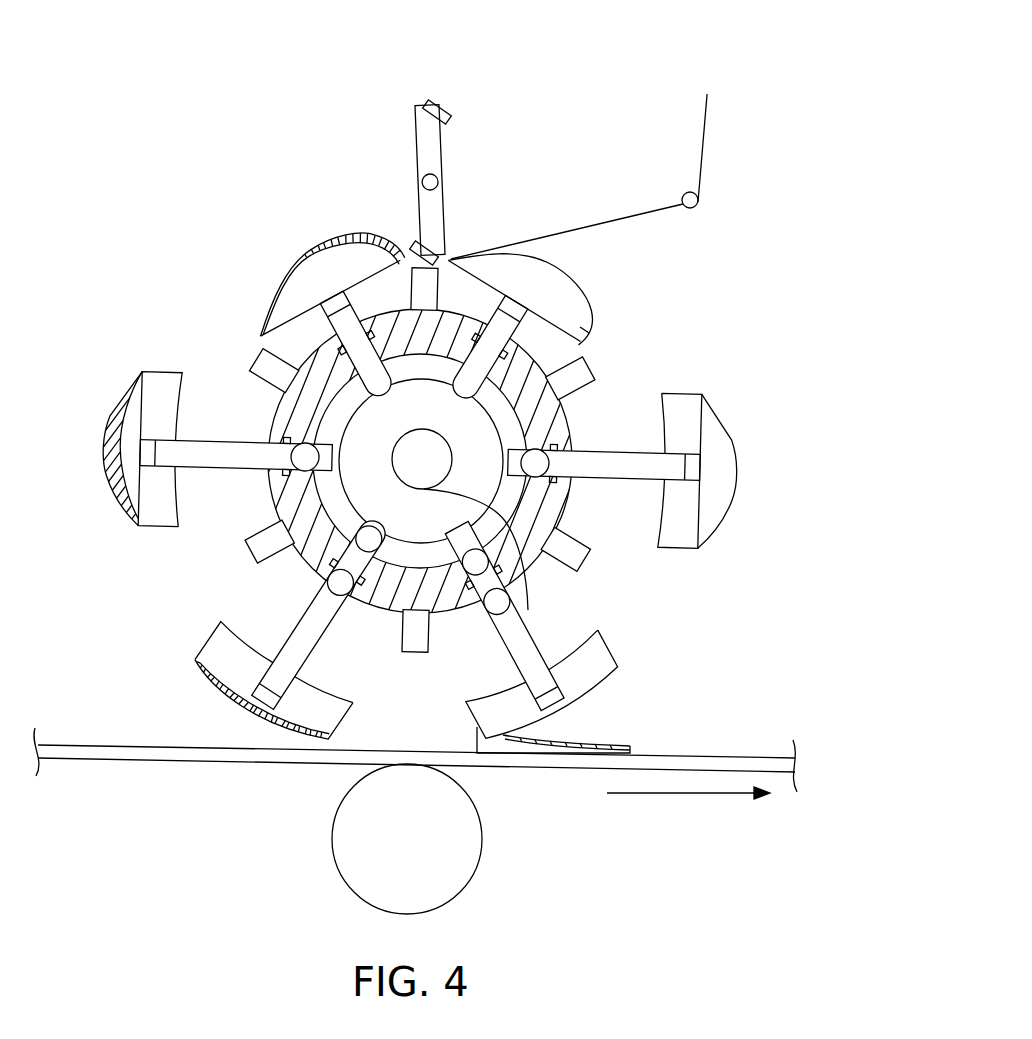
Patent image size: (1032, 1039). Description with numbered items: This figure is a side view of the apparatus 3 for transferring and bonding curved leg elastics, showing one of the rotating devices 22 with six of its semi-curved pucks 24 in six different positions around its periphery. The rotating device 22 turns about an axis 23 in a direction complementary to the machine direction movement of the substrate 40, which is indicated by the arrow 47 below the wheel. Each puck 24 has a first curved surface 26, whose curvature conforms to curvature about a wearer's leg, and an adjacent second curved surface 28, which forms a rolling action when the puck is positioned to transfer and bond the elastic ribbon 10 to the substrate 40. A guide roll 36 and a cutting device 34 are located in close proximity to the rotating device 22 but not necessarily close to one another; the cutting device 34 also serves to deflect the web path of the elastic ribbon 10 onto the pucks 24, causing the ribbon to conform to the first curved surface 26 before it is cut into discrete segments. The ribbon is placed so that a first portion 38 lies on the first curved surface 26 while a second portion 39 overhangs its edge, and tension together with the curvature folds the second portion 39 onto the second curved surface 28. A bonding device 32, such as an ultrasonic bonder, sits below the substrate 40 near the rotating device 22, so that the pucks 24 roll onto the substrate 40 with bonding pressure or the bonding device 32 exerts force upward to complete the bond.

The apparatus 3 is at (782, 110).
The elastic ribbon 10 is at (705, 147).
The rotating device 22 is at (612, 382).
The axis 23 is at (532, 594).
The semi-curved puck 24 is at (300, 258).
The first curved surface 26 is at (558, 268).
The second curved surface 28 is at (590, 333).
The bonding device 32 is at (470, 877).
The cutting device 34 is at (453, 160).
The guide roll 36 is at (698, 203).
The first portion 38 is at (145, 528).
The second portion 39 is at (116, 482).
The substrate 40 is at (730, 758).
The arrow 47 is at (673, 793).